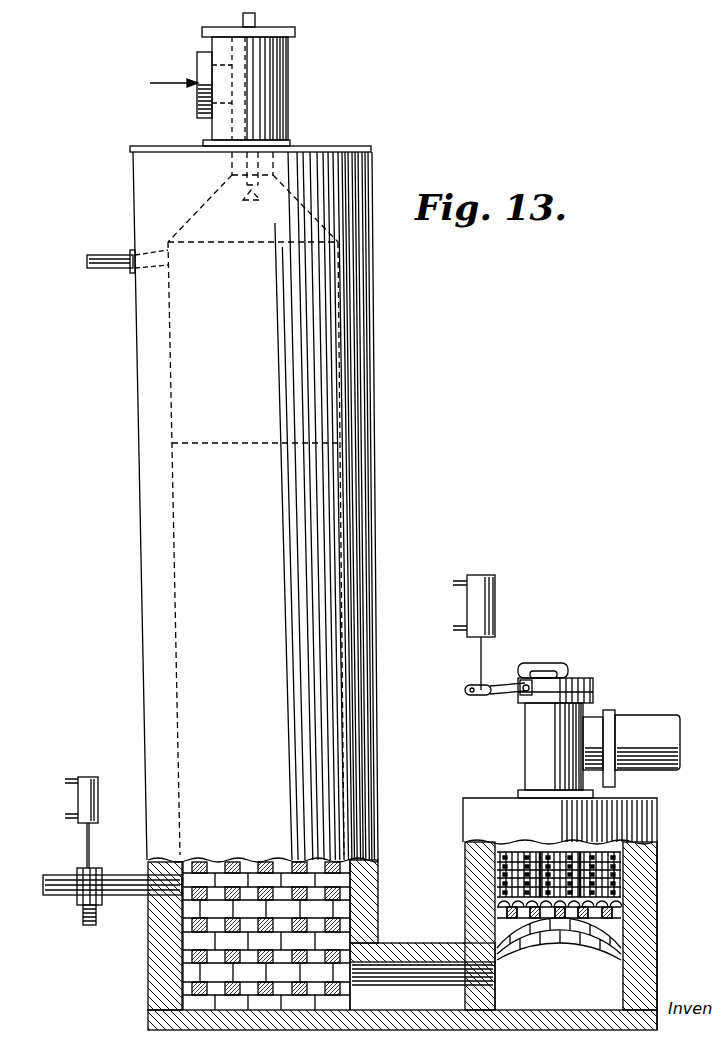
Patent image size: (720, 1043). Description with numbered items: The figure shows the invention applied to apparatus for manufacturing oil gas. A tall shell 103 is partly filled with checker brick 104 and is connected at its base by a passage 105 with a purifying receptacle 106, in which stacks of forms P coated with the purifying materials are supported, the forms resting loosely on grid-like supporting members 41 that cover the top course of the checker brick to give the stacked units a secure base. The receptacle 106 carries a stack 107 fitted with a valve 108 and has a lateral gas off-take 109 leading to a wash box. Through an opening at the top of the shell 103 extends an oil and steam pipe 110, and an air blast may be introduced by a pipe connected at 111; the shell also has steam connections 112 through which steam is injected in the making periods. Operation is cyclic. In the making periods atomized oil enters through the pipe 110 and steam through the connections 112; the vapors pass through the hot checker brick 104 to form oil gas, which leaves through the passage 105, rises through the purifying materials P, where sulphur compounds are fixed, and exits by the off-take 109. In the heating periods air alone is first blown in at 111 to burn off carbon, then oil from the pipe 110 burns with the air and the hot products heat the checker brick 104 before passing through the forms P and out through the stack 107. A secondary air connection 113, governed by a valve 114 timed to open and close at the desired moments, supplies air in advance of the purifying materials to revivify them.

The shell 103 is at (170, 697).
The checker brick 104 is at (196, 897).
The passage 105 is at (417, 953).
The purifying receptacle 106 is at (490, 816).
The stack 107 is at (537, 741).
The valve 108 is at (585, 678).
The lateral gas off-take 109 is at (655, 722).
The oil and steam pipe 110 is at (258, 20).
The air blast connection 111 is at (205, 99).
The steam connections 112 is at (117, 257).
The secondary air connection 113 is at (118, 877).
The valve 114 is at (85, 920).
The forms coated with purifying materials P is at (626, 885).
The grid-like supporting members 41 is at (626, 896).